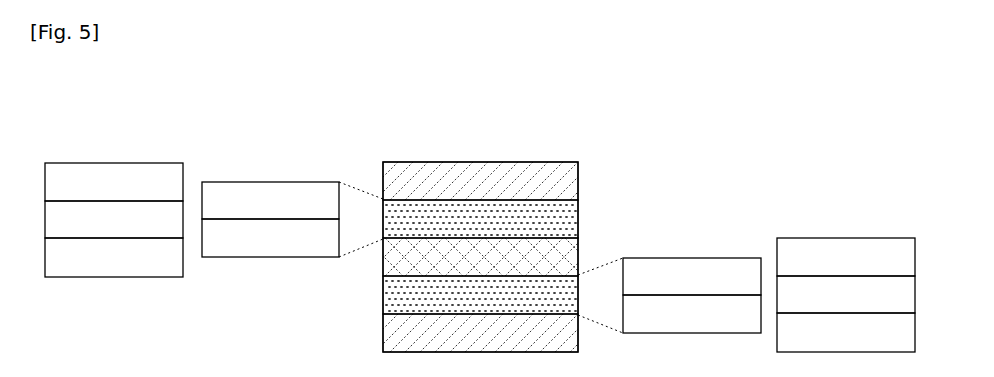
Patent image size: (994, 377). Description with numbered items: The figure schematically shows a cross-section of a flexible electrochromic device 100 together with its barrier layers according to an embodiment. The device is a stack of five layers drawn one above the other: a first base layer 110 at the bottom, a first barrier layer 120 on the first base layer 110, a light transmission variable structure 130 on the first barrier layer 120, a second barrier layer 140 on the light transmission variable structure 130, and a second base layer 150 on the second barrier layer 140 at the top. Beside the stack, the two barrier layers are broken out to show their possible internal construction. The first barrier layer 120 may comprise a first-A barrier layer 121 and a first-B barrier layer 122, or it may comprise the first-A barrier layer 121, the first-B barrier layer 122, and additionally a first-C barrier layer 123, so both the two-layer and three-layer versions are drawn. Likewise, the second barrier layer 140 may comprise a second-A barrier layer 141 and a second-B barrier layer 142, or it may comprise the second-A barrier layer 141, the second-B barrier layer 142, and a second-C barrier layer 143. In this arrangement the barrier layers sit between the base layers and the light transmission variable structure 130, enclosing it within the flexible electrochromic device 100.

The flexible electrochromic device 100 is at (542, 114).
The first base layer 110 is at (484, 333).
The first barrier layer 120 is at (480, 295).
The first-A barrier layer 121 is at (769, 323).
The first-B barrier layer 122 is at (769, 285).
The first-C barrier layer 123 is at (846, 257).
The light transmission variable structure 130 is at (494, 257).
The second barrier layer 140 is at (480, 219).
The second-A barrier layer 141 is at (192, 191).
The second-B barrier layer 142 is at (192, 229).
The second-C barrier layer 143 is at (114, 257).
The second base layer 150 is at (484, 181).